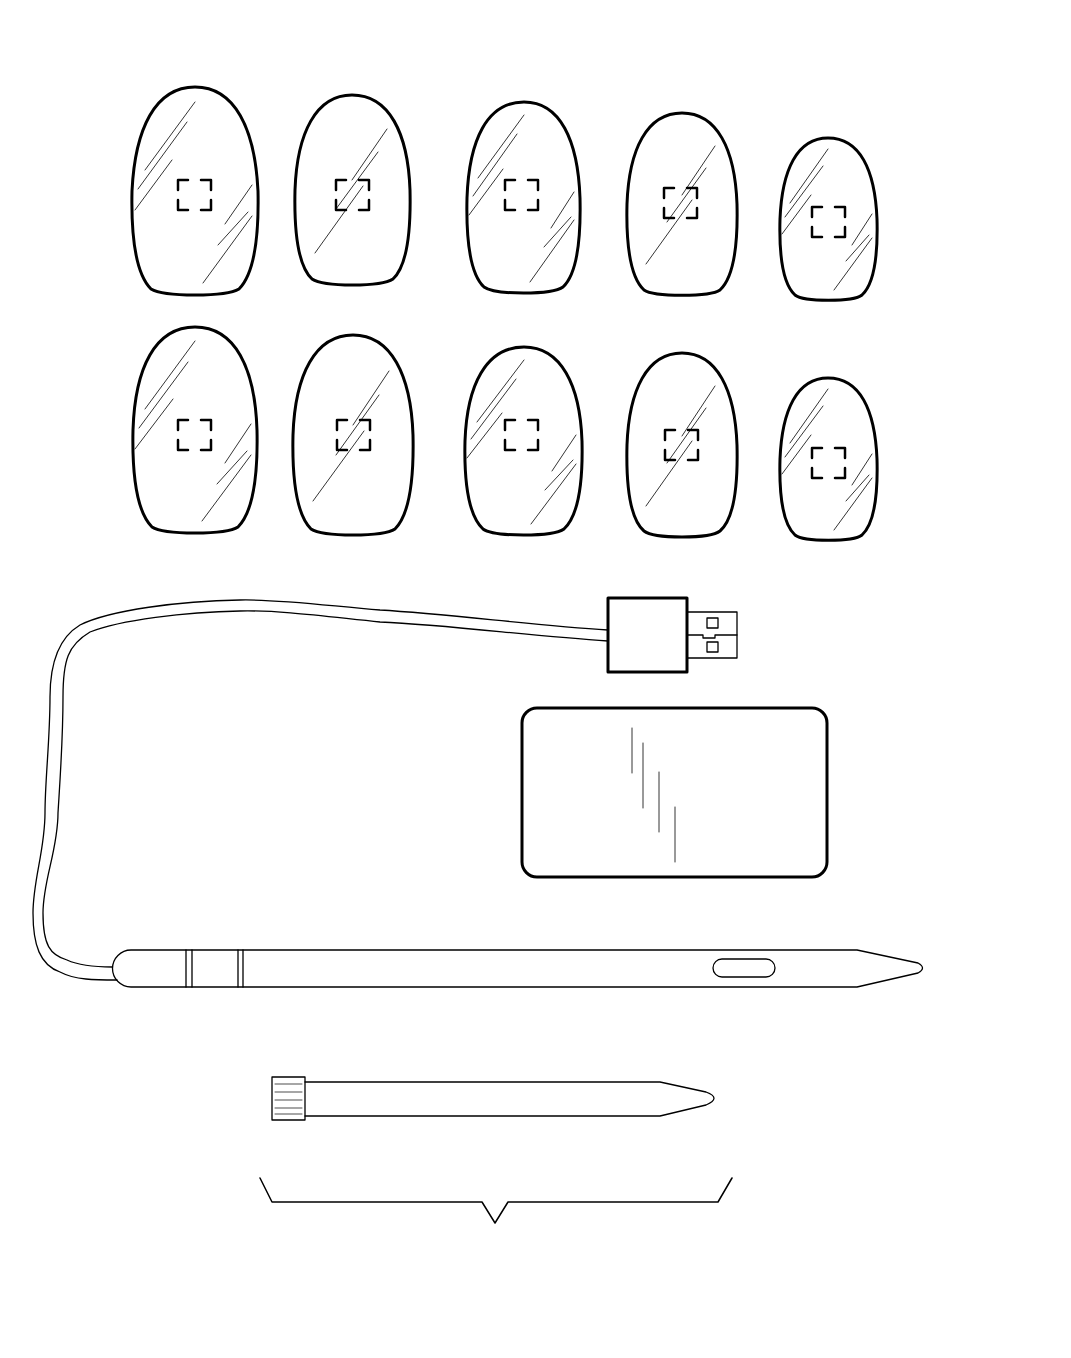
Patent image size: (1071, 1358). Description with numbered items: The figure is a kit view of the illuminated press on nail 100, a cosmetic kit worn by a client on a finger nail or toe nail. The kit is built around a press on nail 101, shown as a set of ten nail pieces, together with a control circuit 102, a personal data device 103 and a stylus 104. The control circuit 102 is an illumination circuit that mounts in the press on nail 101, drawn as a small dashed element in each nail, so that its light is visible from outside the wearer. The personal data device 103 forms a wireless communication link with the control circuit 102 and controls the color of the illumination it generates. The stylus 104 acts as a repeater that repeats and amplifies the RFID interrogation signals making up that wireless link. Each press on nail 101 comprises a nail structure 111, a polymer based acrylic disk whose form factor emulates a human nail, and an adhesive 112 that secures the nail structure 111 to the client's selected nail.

The illuminated press on nail 100 is at (122, 82).
The press on nail 101 is at (696, 106).
The control circuit 102 is at (697, 205).
The personal data device 103 is at (803, 777).
The stylus 104 is at (842, 968).
The nail structure 111 is at (853, 513).
The adhesive 112 is at (677, 1096).